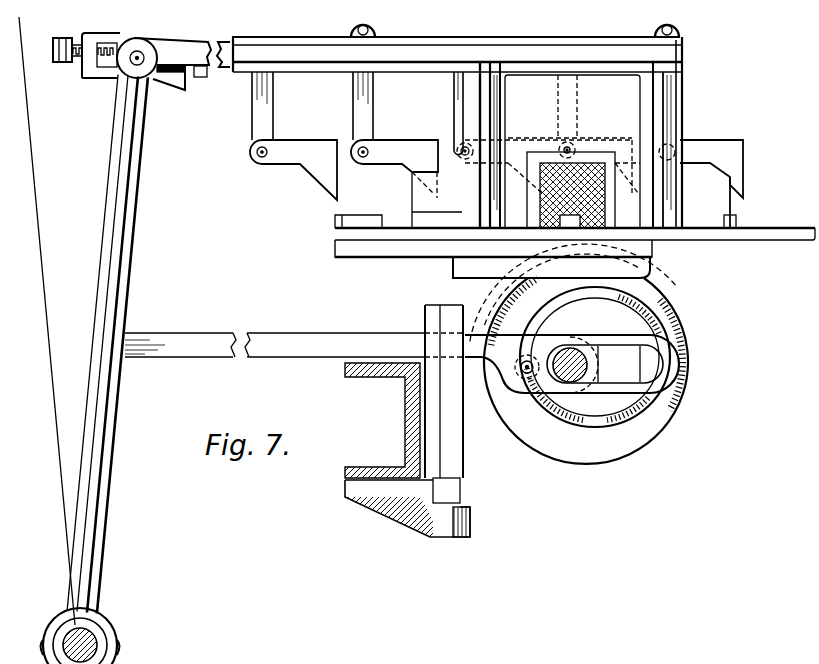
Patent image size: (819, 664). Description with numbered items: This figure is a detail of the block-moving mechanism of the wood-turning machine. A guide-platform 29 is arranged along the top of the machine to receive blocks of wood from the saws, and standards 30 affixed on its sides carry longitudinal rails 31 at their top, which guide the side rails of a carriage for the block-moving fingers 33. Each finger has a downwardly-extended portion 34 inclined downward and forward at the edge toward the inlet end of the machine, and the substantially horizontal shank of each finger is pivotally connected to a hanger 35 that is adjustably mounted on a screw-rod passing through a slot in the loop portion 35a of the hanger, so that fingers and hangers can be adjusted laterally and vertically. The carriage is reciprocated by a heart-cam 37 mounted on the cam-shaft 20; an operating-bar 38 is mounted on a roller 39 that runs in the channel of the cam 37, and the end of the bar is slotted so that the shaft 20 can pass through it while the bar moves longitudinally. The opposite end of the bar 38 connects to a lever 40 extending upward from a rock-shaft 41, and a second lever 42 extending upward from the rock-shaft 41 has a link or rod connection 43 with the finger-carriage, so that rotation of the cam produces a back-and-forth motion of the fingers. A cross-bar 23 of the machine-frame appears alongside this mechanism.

The cam-shaft 20 is at (571, 354).
The cross-bar 23 is at (416, 428).
The guide-platform 29 is at (772, 233).
The standards 30 is at (680, 113).
The longitudinal rails 31 is at (623, 33).
The block-moving fingers 33 is at (317, 141).
The downwardly-extended portions 34 is at (745, 175).
The hangers 35 is at (372, 112).
The loop portions 35a is at (373, 27).
The heart-cam 37 is at (630, 437).
The operating-bar 38 is at (373, 340).
The roller 39 is at (514, 374).
The lever 40 is at (506, 661).
The rock-shaft 41 is at (93, 634).
The lever 42 is at (114, 427).
The link or rod connection 43 is at (206, 44).